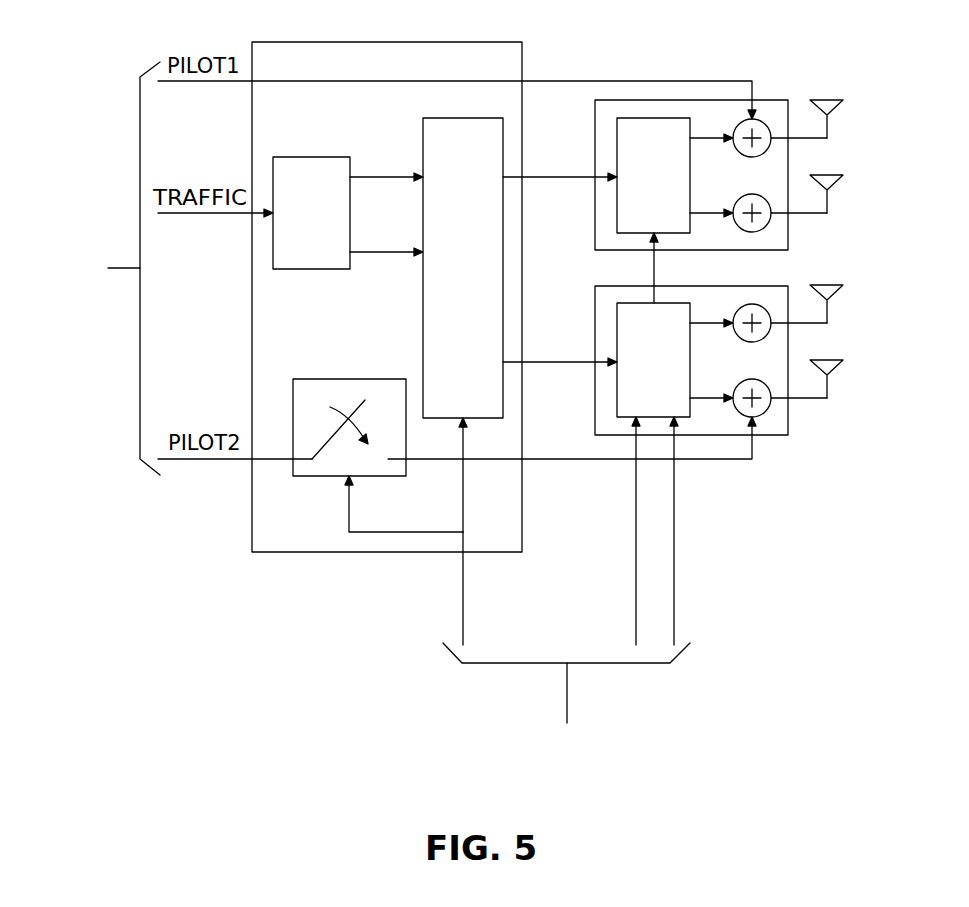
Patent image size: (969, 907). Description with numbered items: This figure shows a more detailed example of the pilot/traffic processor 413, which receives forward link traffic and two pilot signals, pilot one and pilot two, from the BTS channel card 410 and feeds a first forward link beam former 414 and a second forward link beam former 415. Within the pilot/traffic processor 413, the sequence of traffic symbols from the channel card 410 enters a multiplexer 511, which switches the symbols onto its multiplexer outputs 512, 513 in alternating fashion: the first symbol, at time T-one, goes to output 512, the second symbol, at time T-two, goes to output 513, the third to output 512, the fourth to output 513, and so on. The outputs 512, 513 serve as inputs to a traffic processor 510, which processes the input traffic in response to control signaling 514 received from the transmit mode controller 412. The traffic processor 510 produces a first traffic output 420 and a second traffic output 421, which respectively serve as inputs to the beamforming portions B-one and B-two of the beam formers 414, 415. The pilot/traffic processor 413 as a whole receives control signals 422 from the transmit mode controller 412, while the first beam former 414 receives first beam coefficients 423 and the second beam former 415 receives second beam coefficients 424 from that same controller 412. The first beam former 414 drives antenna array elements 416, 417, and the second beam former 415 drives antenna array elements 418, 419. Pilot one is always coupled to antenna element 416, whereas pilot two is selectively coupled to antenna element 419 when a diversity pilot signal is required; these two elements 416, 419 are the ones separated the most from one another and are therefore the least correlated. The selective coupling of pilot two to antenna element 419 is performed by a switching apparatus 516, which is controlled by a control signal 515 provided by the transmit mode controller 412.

The BTS channel card 410 is at (101, 268).
The transmit mode controller 412 is at (566, 711).
The pilot/traffic processor 413 is at (252, 297).
The first forward link beam former 414 is at (788, 240).
The second forward link beam former 415 is at (788, 422).
The antenna array element 416 is at (838, 98).
The antenna array element 417 is at (838, 173).
The antenna array element 418 is at (838, 283).
The antenna array element 419 is at (838, 358).
The first traffic output 420 is at (565, 176).
The second traffic output 421 is at (565, 361).
The control signals 422 is at (463, 593).
The first beam coefficients 423 is at (636, 535).
The second beam coefficients 424 is at (674, 535).
The traffic processor 510 is at (423, 302).
The multiplexer 511 is at (312, 157).
The multiplexer output 512 is at (388, 177).
The multiplexer output 513 is at (388, 252).
The control signaling 514 is at (463, 502).
The control signal 515 is at (349, 513).
The switching apparatus 516 is at (350, 379).